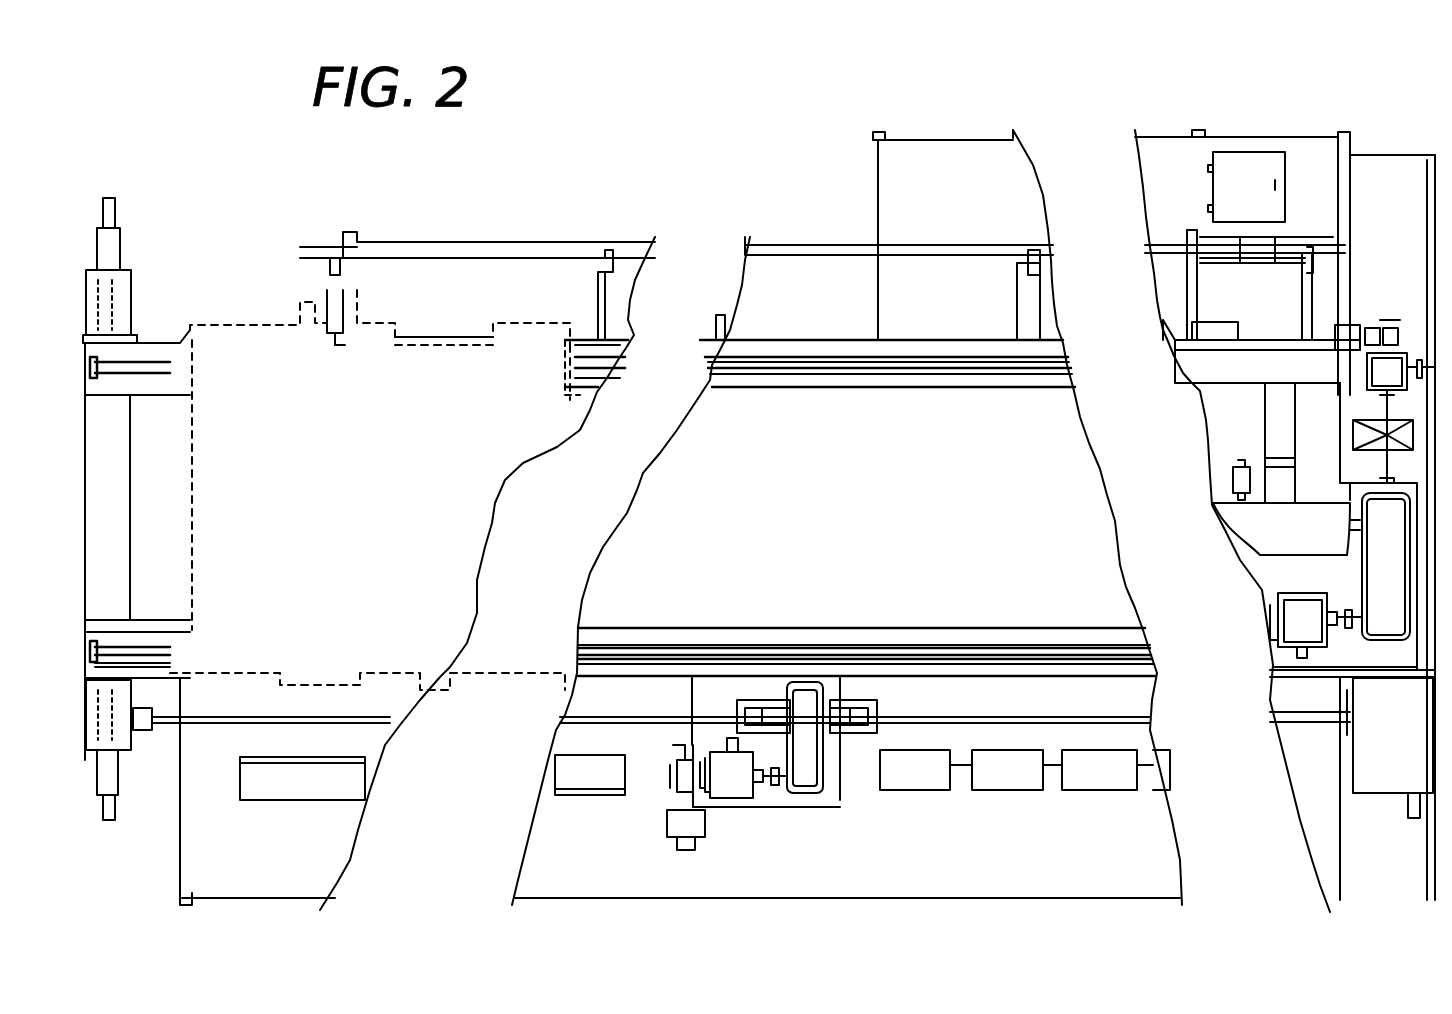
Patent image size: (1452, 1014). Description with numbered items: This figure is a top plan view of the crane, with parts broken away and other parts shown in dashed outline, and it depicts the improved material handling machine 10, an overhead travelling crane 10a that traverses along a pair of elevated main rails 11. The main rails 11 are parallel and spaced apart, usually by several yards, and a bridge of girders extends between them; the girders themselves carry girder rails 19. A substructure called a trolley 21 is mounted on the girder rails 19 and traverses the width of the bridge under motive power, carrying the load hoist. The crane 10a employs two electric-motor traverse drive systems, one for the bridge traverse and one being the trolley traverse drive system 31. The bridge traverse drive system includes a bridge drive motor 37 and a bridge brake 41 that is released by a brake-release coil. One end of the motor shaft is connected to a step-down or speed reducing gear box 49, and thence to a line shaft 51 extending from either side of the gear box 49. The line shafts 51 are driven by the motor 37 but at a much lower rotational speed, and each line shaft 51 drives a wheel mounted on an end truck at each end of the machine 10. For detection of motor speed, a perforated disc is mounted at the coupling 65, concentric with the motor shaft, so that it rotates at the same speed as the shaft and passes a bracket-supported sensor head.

The machine 10 is at (600, 207).
The overhead crane 10a is at (812, 245).
The main rails 11 is at (115, 213).
The girder rails 19 is at (828, 368).
The trolley 21 is at (1229, 421).
The trolley traverse drive system 31 is at (1376, 583).
The bridge drive motor 37 is at (727, 775).
The bridge brake 41 is at (667, 828).
The speed reducing gear box 49 is at (805, 760).
The line shaft 51 is at (650, 705).
The coupling 65 is at (775, 785).